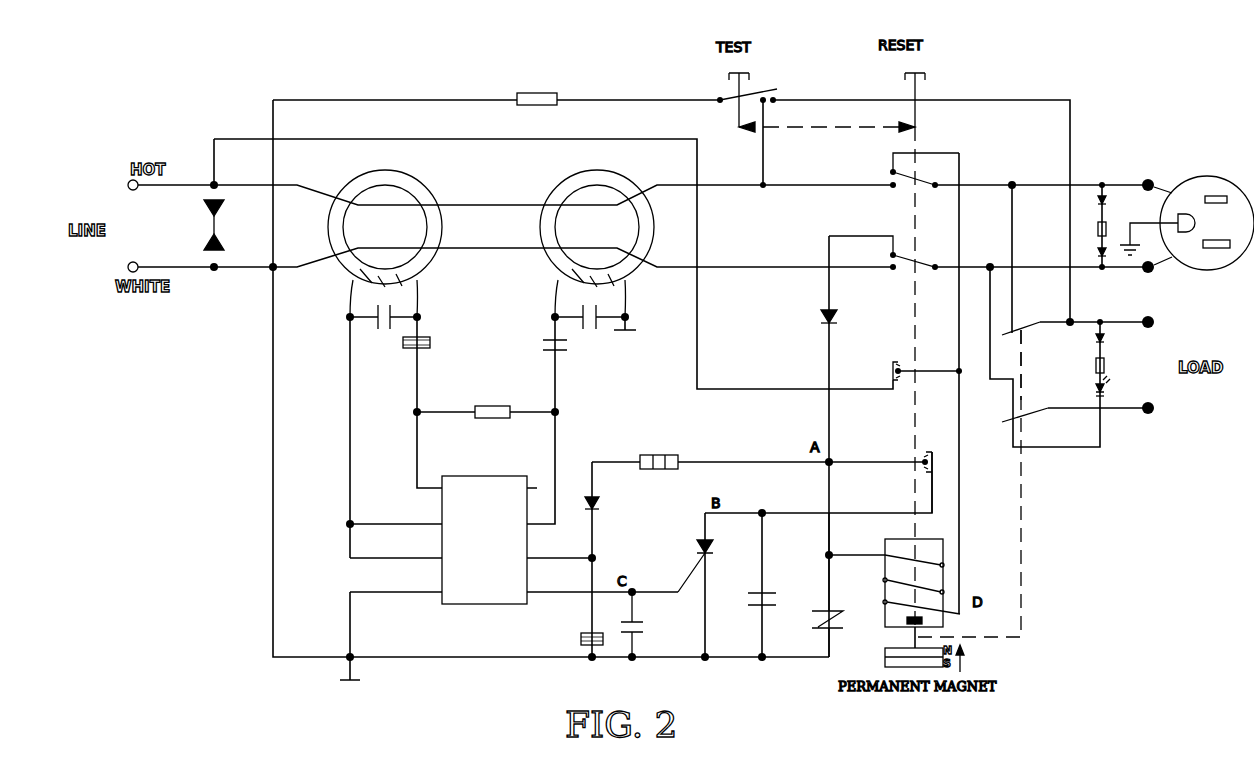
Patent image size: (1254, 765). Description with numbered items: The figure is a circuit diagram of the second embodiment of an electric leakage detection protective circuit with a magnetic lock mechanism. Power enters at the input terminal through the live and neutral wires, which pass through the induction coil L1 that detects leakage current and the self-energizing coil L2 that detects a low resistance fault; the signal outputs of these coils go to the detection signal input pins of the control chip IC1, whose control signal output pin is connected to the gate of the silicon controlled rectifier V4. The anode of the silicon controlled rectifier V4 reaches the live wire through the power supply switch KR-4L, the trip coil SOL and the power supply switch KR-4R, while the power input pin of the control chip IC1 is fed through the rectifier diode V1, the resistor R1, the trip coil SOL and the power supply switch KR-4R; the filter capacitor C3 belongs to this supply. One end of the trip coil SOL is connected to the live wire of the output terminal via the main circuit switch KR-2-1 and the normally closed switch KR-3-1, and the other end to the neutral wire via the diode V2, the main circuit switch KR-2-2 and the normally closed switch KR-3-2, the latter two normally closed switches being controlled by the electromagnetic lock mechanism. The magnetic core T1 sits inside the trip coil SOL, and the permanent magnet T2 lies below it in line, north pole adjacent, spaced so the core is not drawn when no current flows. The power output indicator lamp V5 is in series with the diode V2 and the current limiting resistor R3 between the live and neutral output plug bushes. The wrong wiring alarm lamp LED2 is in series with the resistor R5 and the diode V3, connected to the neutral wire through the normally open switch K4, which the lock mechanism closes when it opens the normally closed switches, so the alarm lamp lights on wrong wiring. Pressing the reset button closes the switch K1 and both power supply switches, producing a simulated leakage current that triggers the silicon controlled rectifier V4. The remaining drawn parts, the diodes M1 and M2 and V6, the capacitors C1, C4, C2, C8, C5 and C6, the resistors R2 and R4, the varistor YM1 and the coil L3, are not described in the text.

The diode M1 is at (230, 208).
The diode M2 is at (230, 234).
The induction coil L1 is at (385, 233).
The self-energizing coil L2 is at (597, 233).
The capacitor C1 is at (383, 308).
The capacitor C4 is at (428, 341).
The capacitor C2 is at (590, 308).
The capacitor C8 is at (569, 348).
The resistor R2 is at (486, 403).
The test resistor R4 is at (537, 89).
The resistor R1 is at (710, 451).
The switch K1 is at (763, 89).
The main circuit switch KR-2-1 is at (933, 169).
The main circuit switch KR-2-2 is at (901, 251).
The normally closed switch KR-3-1 is at (1038, 335).
The normally closed switch KR-3-2 is at (1038, 403).
The power supply switch KR-4R is at (898, 375).
The power supply switch KR-4L is at (880, 480).
The normally open switch K4 is at (997, 385).
The diode V2 is at (951, 261).
The current limiting resistor R3 is at (1090, 229).
The power output indicator lamp V5 is at (1091, 254).
The diode V3 is at (1112, 343).
The resistor R5 is at (1087, 367).
The wrong wiring alarm lamp LED2 is at (1121, 384).
The diode V6 is at (1113, 400).
The rectifier diode V1 is at (600, 510).
The silicon controlled rectifier V4 is at (686, 564).
The filter capacitor C3 is at (587, 636).
The capacitor C5 is at (647, 624).
The capacitor C6 is at (744, 597).
The MOV metal oxide varistor YM1 is at (815, 585).
The control chip IC1 is at (484, 540).
The trip coil SOL is at (914, 583).
The solenoid coil L3 is at (908, 584).
The magnetic core T1 is at (907, 620).
The permanent magnet T2 is at (903, 657).